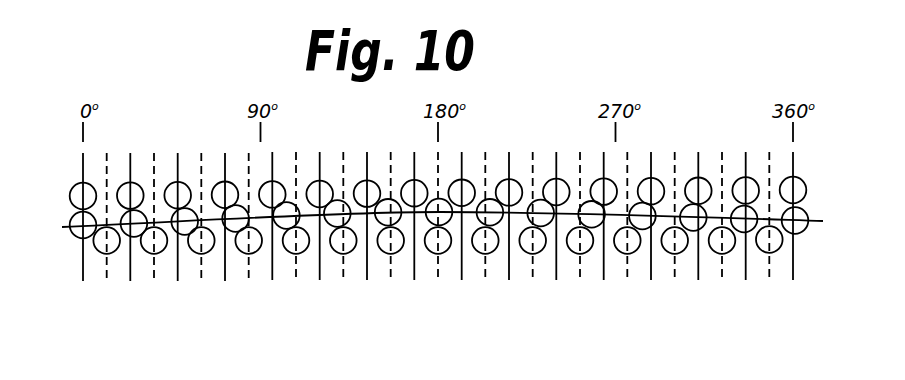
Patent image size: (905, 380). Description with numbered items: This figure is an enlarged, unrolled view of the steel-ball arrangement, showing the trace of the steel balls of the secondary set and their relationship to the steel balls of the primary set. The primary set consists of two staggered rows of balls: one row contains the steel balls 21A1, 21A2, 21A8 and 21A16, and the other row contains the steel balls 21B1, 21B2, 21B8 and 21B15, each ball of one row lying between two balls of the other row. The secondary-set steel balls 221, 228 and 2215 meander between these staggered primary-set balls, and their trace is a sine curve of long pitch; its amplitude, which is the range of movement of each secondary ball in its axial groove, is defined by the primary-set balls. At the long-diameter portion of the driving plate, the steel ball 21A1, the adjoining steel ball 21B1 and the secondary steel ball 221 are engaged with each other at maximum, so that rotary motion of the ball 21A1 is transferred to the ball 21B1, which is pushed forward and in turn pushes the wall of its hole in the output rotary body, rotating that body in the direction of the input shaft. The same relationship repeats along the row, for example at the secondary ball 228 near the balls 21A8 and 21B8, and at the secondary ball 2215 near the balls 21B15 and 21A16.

The steel ball in one row of the primary set 21A1 is at (86, 182).
The steel ball in one row of the primary set 21A2 is at (137, 181).
The steel ball in one row of the primary set 21A8 is at (412, 180).
The steel ball in one row of the primary set 21A16 is at (790, 178).
The steel ball in the other row of the primary set 21B1 is at (103, 254).
The steel ball in the other row of the primary set 21B2 is at (157, 254).
The steel ball in the other row of the primary set 21B8 is at (443, 253).
The steel ball in the other row of the primary set 21B15 is at (761, 252).
The steel ball in the secondary set 221 is at (73, 238).
The steel ball in the secondary set 228 is at (428, 219).
The steel ball in the secondary set 2215 is at (798, 234).